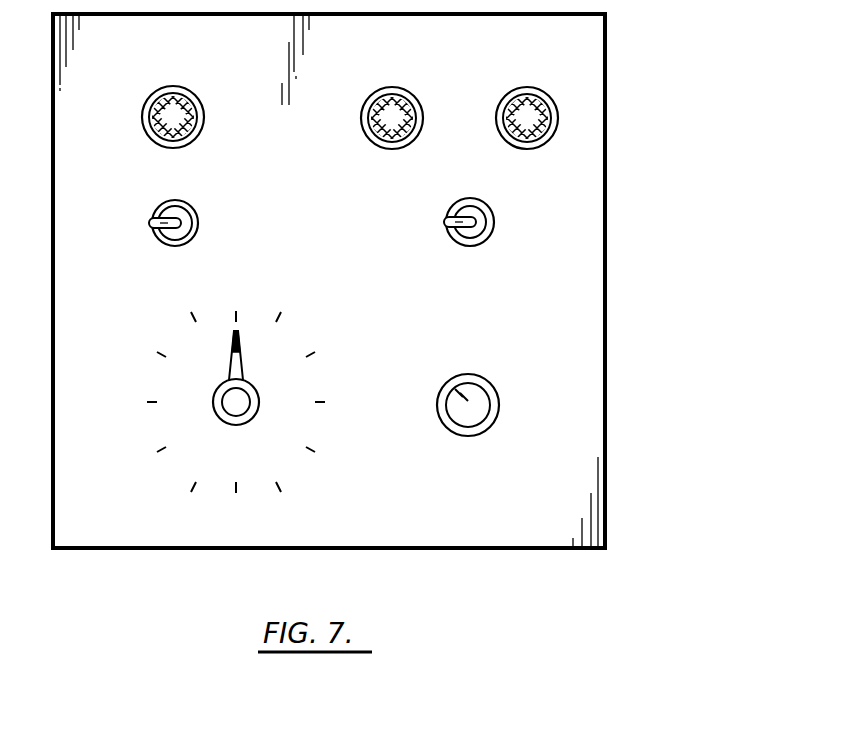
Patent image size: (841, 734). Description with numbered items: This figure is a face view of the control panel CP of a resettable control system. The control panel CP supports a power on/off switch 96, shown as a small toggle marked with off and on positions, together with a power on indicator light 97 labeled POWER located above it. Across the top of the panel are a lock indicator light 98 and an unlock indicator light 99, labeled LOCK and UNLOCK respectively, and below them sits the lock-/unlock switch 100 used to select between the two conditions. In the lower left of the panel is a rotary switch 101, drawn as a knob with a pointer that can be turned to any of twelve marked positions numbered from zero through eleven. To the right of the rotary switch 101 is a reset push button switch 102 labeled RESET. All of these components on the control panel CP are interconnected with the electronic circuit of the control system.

The control panel CP is at (628, 276).
The power on/off switch 96 is at (161, 247).
The power on indicator light 97 is at (150, 139).
The lock indicator light 98 is at (373, 136).
The unlock indicator light 99 is at (517, 140).
The lock-/unlock switch 100 is at (468, 247).
The rotary switch 101 is at (219, 470).
The reset push button switch 102 is at (485, 403).